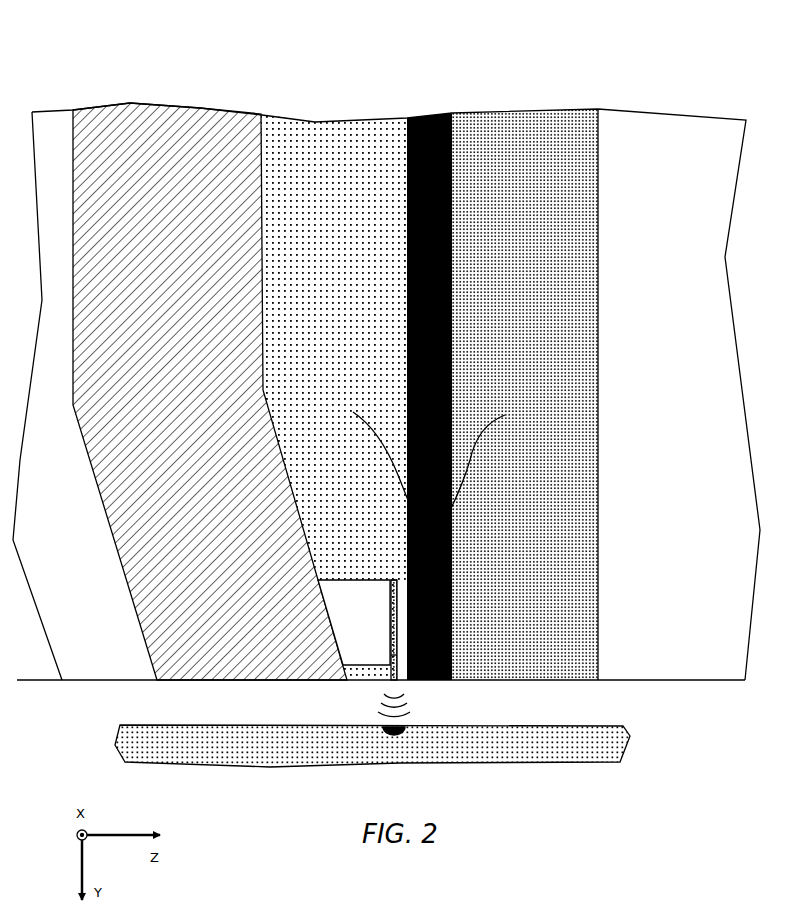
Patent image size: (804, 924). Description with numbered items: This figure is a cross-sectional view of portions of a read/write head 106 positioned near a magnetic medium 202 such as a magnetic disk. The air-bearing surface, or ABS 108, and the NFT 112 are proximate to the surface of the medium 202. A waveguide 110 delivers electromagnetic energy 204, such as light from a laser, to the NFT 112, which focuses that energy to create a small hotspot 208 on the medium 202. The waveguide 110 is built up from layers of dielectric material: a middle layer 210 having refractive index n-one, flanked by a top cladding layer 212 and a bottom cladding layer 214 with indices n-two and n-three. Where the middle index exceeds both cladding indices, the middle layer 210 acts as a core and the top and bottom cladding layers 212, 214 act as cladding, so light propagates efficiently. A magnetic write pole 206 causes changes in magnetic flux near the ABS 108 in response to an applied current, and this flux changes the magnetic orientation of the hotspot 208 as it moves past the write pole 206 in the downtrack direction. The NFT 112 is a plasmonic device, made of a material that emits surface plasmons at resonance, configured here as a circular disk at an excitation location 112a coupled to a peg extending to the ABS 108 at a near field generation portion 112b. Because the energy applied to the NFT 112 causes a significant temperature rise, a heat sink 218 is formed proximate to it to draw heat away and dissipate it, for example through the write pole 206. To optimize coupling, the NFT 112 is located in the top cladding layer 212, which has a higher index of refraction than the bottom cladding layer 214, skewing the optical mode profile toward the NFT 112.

The read/write head 106 is at (662, 54).
The ABS 108 is at (30, 681).
The waveguide 110 is at (429, 360).
The NFT 112 is at (397, 683).
The excitation location 112a is at (399, 597).
The near field generation portion 112b is at (399, 655).
The magnetic medium 202 is at (168, 748).
The electromagnetic energy 204 is at (478, 432).
The magnetic write pole 206 is at (210, 111).
The hotspot 208 is at (392, 738).
The middle layer 210 is at (428, 117).
The top cladding layer 212 is at (312, 118).
The bottom cladding layer 214 is at (525, 386).
The heat sink 218 is at (372, 660).